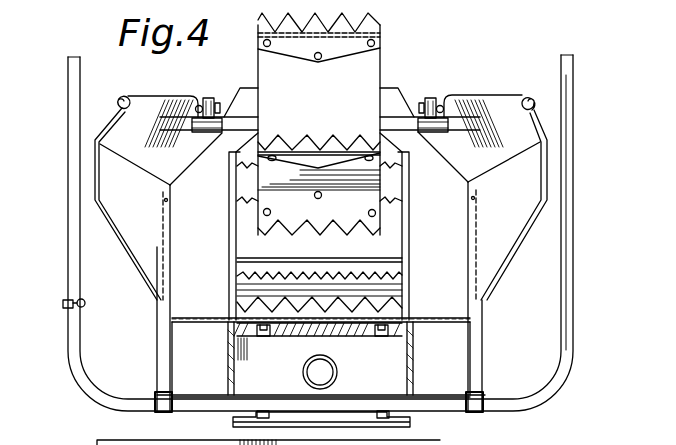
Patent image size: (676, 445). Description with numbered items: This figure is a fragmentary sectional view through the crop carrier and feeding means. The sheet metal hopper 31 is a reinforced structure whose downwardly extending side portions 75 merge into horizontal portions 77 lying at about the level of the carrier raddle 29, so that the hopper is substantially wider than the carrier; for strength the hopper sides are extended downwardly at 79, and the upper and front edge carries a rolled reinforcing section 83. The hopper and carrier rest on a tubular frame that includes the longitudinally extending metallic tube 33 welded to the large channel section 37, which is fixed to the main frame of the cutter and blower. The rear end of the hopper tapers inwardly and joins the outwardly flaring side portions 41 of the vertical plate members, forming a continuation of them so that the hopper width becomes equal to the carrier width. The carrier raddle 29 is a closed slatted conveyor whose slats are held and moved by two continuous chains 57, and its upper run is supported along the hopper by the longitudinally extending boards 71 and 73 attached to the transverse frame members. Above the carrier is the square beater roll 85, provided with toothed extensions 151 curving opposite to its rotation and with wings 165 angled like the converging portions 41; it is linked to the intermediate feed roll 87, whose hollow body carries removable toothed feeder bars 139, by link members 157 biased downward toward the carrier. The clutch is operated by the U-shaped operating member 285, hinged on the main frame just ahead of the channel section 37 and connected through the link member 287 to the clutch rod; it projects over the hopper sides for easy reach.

The U-shaped operating member 285 is at (69, 112).
The link member 287 is at (85, 303).
The horizontal portions of hopper 77 is at (190, 318).
The carrier raddle 29 is at (410, 317).
The longitudinally extending board 71 is at (291, 337).
The continuous chains 57 is at (261, 337).
The large channel section 37 is at (397, 372).
The downwardly extended hopper sides 79 is at (226, 375).
The longitudinally extending board 73 is at (226, 338).
The metallic tube 33 is at (338, 373).
The toothed feeder bars 139 is at (382, 268).
The beater roll 85 is at (360, 69).
The toothed extensions 151 is at (372, 31).
The intermediate feed roll 87 is at (388, 189).
The wings 165 is at (236, 98).
The link members 157 is at (206, 99).
The rolled reinforcing section 83 is at (162, 97).
The hopper 31 is at (118, 132).
The side portions of hopper 75 is at (133, 247).
The outwardly flaring side portions 41 is at (190, 217).